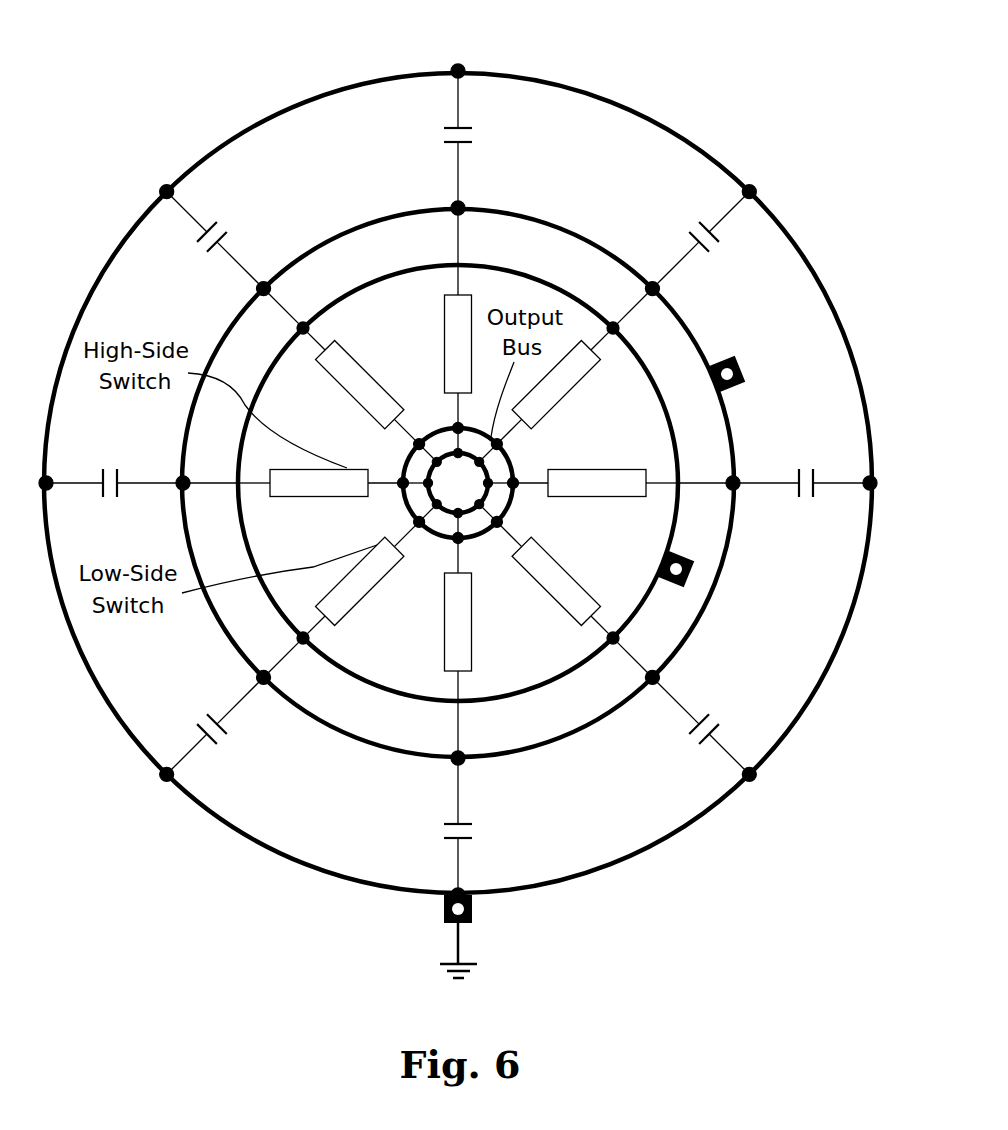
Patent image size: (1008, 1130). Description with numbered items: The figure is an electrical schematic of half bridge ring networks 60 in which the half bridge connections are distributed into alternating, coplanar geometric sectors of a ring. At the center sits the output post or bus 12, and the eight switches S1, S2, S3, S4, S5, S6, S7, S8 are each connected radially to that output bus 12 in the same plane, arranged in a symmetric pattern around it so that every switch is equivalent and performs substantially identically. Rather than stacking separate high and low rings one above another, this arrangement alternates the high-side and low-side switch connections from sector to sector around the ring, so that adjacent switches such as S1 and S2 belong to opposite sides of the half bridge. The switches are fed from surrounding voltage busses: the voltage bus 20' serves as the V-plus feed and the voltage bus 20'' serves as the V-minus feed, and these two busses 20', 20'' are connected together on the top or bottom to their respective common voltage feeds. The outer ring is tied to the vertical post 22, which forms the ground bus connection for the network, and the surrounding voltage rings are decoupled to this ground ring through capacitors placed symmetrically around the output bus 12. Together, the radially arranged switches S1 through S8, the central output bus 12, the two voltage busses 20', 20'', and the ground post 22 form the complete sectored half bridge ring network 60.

The half bridge ring network 60 is at (191, 102).
The output post or bus 12 is at (480, 462).
The voltage bus 20' is at (780, 391).
The voltage bus 20'' is at (627, 549).
The vertical post 22 is at (478, 909).
The switch S1 is at (457, 261).
The switch S2 is at (615, 326).
The switch S3 is at (681, 483).
The switch S4 is at (615, 640).
The switch S5 is at (457, 706).
The switch S6 is at (301, 640).
The switch S7 is at (236, 483).
The switch S8 is at (301, 326).